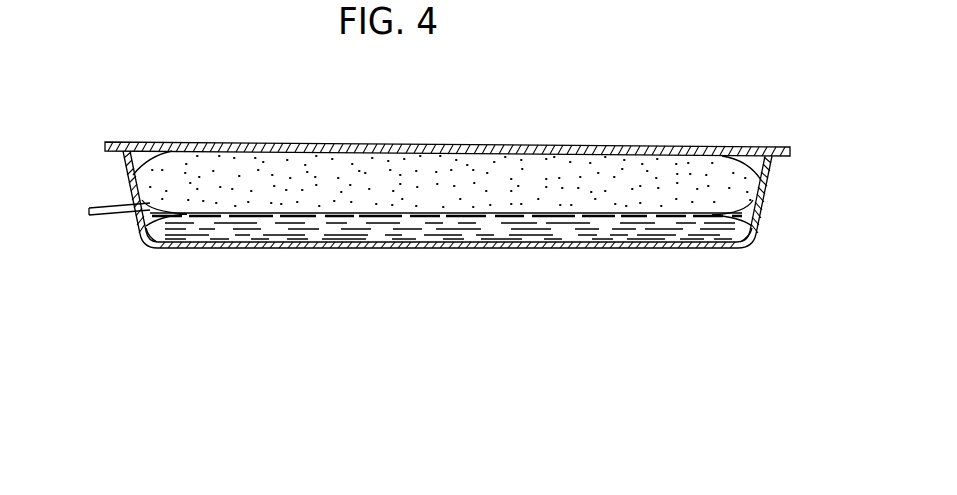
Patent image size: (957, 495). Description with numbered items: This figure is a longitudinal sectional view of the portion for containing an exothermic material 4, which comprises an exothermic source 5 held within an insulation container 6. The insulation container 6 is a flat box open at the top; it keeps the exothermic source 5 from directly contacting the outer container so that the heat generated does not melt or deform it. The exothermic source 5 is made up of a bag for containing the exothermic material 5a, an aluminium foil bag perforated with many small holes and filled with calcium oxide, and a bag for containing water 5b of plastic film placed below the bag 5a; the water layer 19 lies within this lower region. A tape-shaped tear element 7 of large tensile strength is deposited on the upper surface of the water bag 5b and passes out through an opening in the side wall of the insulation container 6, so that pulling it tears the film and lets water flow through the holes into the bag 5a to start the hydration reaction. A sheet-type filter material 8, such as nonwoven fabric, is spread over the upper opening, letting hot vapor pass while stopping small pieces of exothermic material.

The portion for containing an exothermic material 4 is at (302, 86).
The exothermic source 5 is at (809, 217).
The bag for containing the exothermic material 5a is at (749, 208).
The bag for containing water 5b is at (740, 248).
The insulation container 6 is at (785, 168).
The tear element 7 is at (97, 210).
The filter material 8 is at (486, 143).
The liquid layer 19 is at (418, 213).